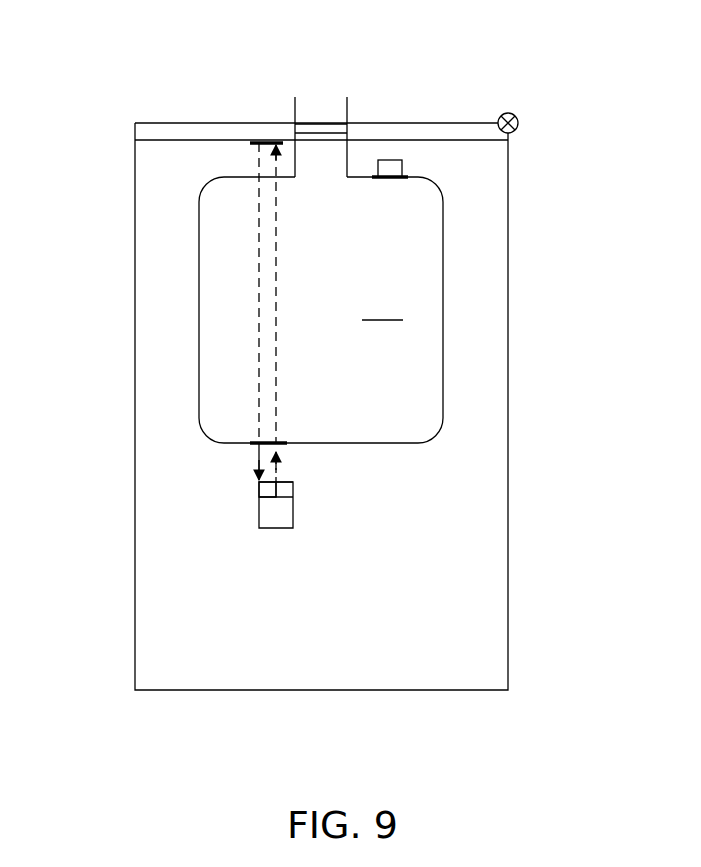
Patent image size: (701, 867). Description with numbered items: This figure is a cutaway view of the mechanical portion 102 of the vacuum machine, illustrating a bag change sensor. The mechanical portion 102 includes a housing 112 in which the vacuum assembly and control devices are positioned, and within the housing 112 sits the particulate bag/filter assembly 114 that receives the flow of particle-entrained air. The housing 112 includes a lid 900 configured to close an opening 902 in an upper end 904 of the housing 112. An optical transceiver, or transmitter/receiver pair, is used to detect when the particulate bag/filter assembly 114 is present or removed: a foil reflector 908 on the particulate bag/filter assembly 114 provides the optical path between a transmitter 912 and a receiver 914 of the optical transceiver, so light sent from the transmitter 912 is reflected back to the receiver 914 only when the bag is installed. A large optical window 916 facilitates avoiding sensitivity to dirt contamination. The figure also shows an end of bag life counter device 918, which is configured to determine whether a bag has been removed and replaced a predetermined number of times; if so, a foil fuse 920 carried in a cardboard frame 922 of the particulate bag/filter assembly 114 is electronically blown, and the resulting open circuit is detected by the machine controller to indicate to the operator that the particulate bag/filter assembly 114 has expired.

The mechanical portion 102 is at (603, 82).
The housing 112 is at (508, 308).
The particulate bag/filter assembly 114 is at (321, 310).
The lid 900 is at (412, 130).
The opening 902 is at (196, 140).
The upper end 904 is at (103, 162).
The foil reflector 908 is at (253, 445).
The transmitter 912 is at (290, 490).
The receiver 914 is at (262, 491).
The optical window 916 is at (283, 483).
The end of bag life counter device 918 is at (566, 172).
The foil fuse 920 is at (405, 164).
The cardboard frame 922 is at (357, 178).